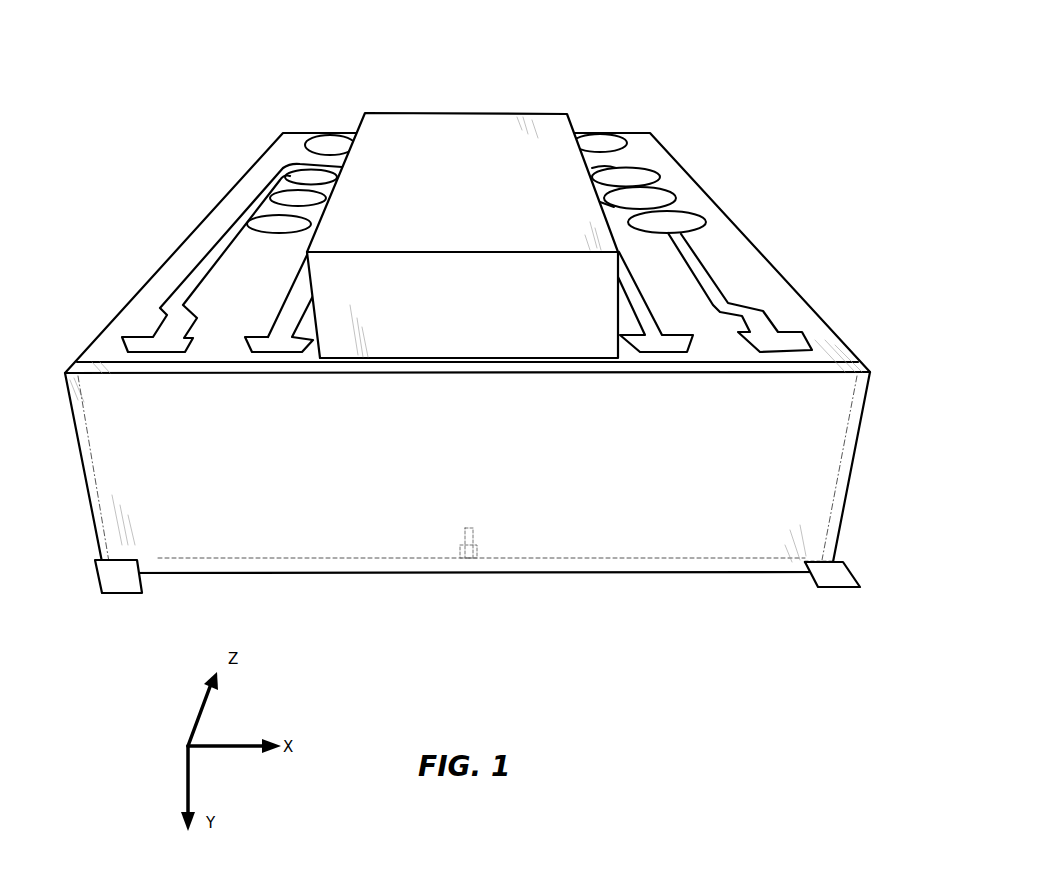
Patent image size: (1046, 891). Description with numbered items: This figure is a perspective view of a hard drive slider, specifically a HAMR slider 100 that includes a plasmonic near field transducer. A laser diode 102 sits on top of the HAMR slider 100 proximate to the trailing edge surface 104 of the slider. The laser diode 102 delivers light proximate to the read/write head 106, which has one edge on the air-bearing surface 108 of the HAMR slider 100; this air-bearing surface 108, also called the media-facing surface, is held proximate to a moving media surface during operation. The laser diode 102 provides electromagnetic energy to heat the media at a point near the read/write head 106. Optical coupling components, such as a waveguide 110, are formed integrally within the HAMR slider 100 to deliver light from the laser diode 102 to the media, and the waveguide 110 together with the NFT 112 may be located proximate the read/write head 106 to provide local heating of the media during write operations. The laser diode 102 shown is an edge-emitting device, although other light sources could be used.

The HAMR slider 100 is at (665, 70).
The laser diode 102 is at (383, 113).
The trailing edge surface 104 is at (125, 595).
The read/write head 106 is at (477, 558).
The air-bearing surface 108 is at (848, 587).
The waveguide 110 is at (468, 448).
The NFT 112 is at (465, 558).